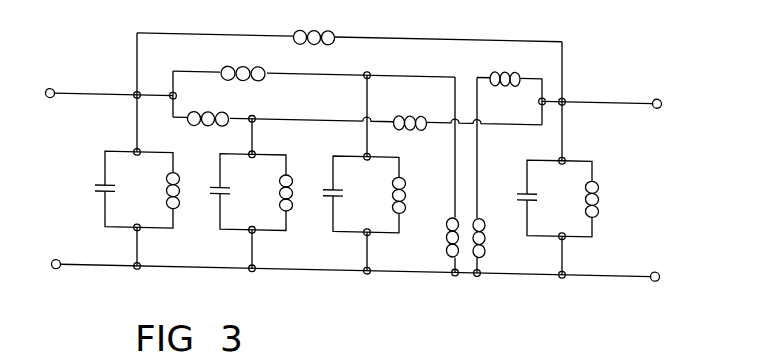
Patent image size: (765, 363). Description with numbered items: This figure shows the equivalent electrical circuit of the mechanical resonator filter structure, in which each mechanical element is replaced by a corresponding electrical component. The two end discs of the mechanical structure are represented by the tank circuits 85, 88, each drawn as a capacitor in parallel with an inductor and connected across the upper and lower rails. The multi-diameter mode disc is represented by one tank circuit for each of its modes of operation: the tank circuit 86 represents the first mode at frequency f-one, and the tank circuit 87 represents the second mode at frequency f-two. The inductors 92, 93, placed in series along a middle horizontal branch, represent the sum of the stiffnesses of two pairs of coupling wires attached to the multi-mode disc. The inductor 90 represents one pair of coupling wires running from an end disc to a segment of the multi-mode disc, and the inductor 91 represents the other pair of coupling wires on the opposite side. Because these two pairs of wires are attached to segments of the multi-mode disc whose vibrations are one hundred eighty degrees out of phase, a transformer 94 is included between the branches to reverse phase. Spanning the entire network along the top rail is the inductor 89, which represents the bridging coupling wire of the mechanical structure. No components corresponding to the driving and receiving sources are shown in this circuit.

The tank circuit 85 is at (151, 160).
The tank circuit 86 is at (267, 162).
The tank circuit 87 is at (386, 164).
The tank circuit 88 is at (566, 164).
The inductor 89 is at (325, 28).
The inductor 90 is at (253, 66).
The inductor 91 is at (510, 66).
The inductor 92 is at (215, 112).
The inductor 93 is at (404, 110).
The transformer 94 is at (462, 210).